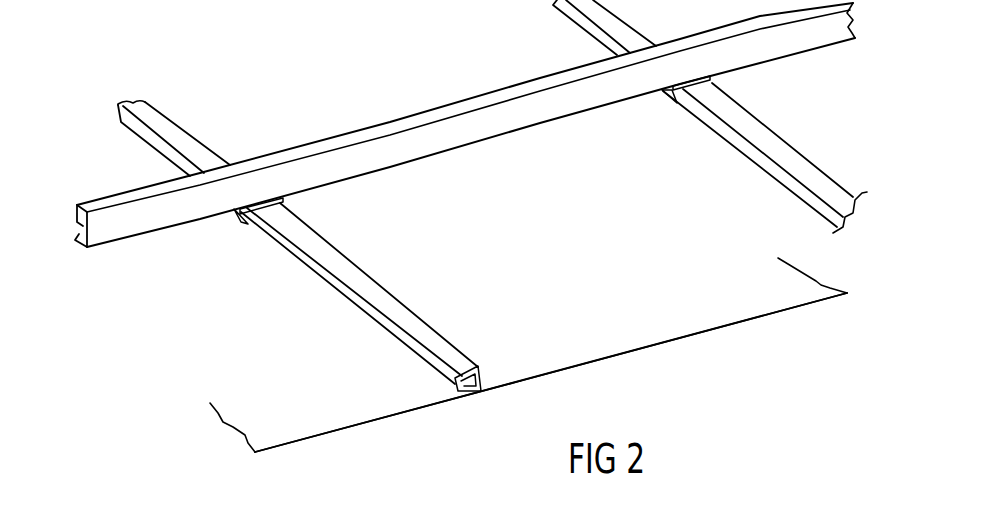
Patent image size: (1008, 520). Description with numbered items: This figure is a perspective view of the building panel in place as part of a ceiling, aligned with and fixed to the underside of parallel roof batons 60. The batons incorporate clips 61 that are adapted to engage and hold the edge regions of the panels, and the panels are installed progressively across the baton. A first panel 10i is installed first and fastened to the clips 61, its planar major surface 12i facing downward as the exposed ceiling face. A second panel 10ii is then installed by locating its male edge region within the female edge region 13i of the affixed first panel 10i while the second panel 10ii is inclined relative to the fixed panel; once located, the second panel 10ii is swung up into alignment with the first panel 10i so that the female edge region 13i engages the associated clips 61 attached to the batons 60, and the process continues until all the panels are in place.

The roof batons 60 is at (380, 124).
The clips 61 is at (280, 205).
The female edge region 13i is at (398, 316).
The major surface 12i is at (570, 323).
The first panel 10i is at (740, 322).
The second panel 10ii is at (397, 413).